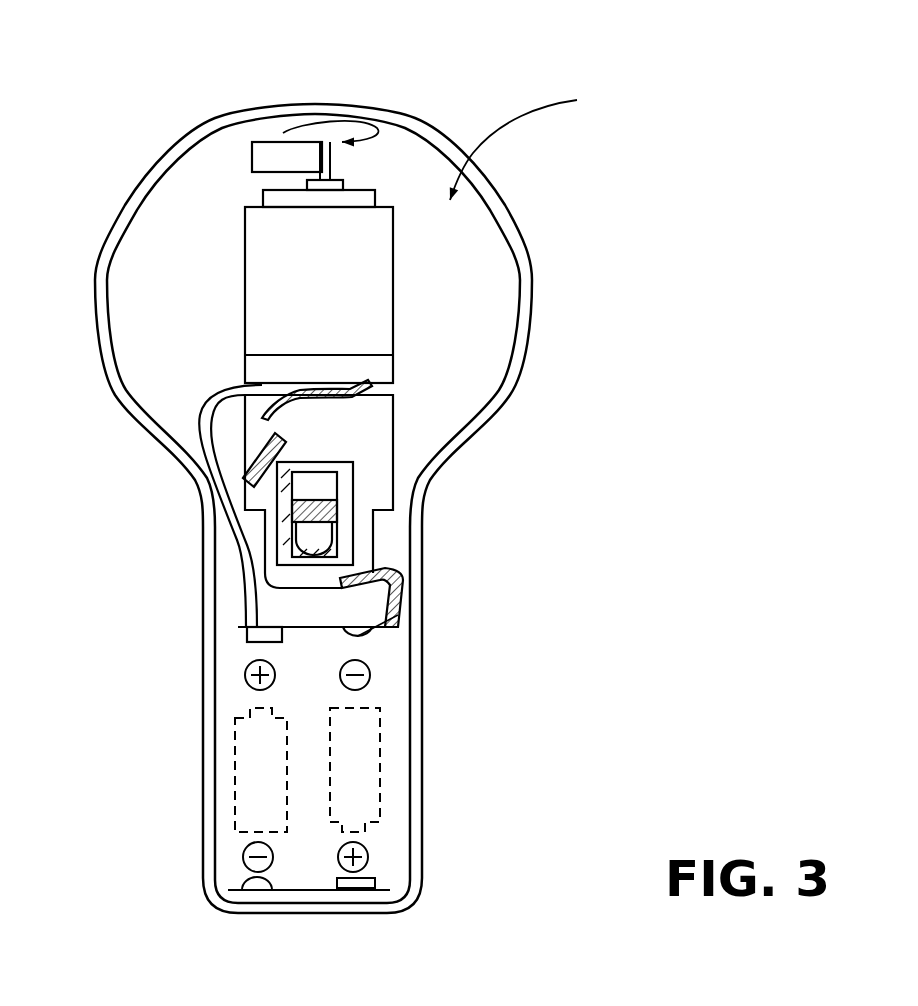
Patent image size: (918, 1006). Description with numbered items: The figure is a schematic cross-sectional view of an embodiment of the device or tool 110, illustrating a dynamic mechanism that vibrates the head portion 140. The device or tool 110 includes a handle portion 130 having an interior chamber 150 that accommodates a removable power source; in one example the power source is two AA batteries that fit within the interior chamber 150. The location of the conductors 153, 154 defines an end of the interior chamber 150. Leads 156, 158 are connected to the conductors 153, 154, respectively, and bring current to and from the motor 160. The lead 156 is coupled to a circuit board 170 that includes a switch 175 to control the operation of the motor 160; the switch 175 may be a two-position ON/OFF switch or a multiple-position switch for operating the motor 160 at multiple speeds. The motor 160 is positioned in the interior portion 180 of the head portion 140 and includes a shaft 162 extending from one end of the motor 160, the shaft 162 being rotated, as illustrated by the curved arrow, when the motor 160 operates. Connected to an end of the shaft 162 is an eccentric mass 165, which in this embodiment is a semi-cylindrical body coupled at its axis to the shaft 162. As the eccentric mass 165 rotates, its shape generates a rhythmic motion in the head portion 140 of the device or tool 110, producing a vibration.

The device or tool 110 is at (203, 848).
The handle portion 130 is at (425, 775).
The head portion 140 is at (538, 257).
The interior chamber 150 is at (383, 695).
The conductor 153 is at (400, 612).
The conductor 154 is at (245, 633).
The lead 156 is at (400, 582).
The lead 158 is at (233, 540).
The motor 160 is at (358, 297).
The shaft 162 is at (325, 170).
The eccentric mass 165 is at (267, 153).
The circuit board 170 is at (378, 427).
The switch 175 is at (355, 500).
The interior portion 180 is at (537, 143).